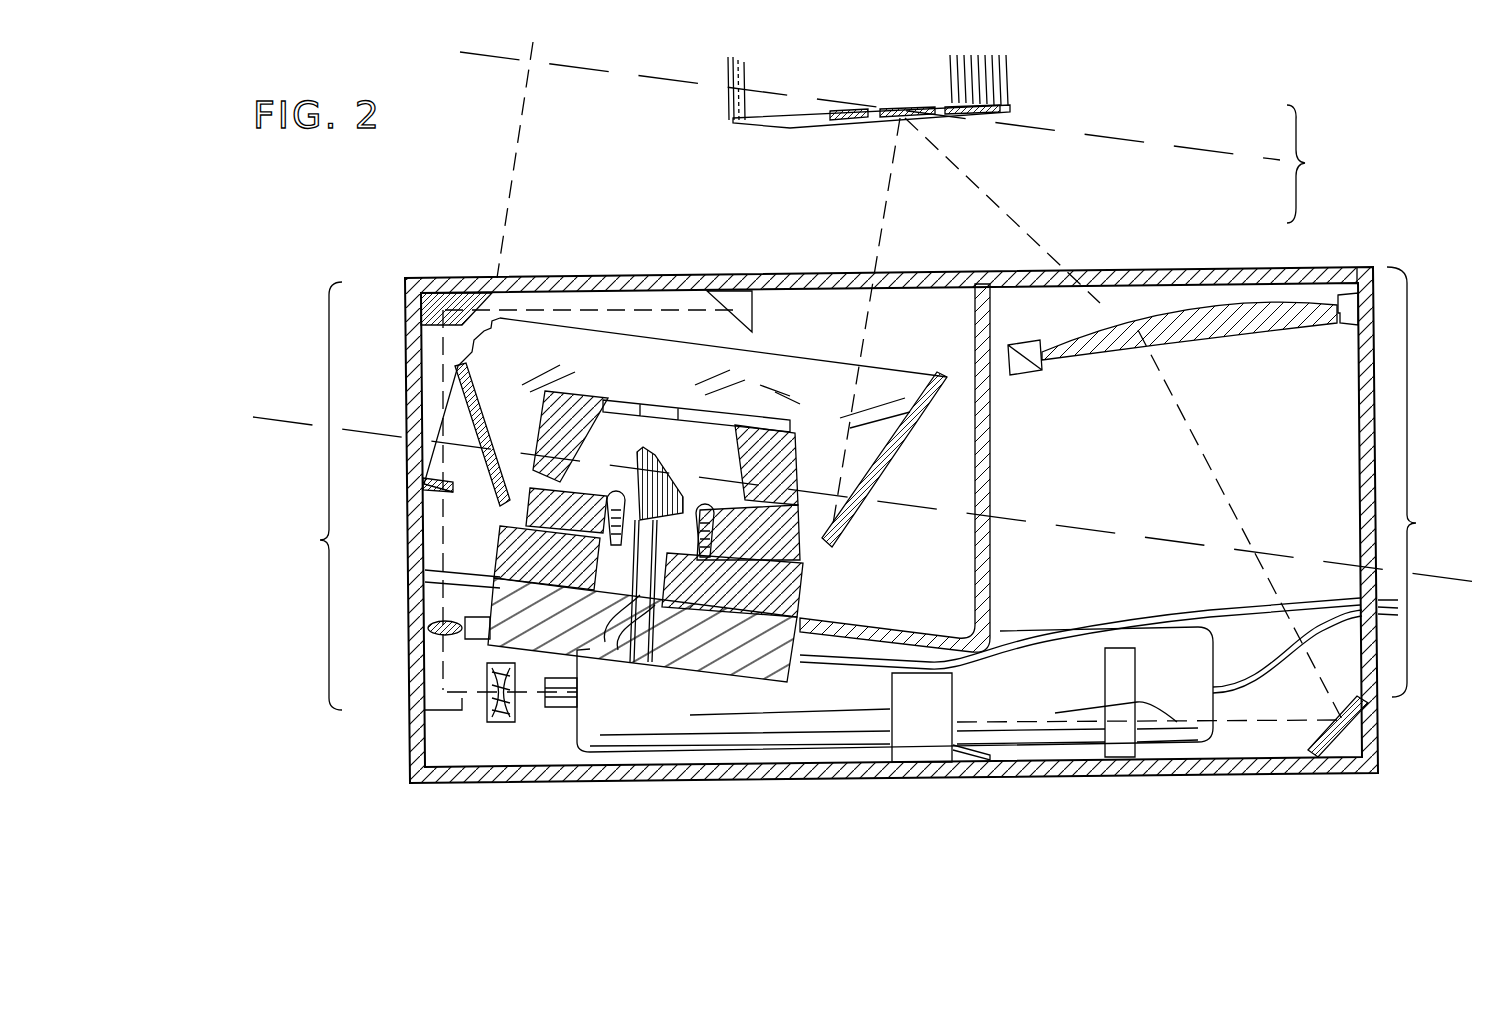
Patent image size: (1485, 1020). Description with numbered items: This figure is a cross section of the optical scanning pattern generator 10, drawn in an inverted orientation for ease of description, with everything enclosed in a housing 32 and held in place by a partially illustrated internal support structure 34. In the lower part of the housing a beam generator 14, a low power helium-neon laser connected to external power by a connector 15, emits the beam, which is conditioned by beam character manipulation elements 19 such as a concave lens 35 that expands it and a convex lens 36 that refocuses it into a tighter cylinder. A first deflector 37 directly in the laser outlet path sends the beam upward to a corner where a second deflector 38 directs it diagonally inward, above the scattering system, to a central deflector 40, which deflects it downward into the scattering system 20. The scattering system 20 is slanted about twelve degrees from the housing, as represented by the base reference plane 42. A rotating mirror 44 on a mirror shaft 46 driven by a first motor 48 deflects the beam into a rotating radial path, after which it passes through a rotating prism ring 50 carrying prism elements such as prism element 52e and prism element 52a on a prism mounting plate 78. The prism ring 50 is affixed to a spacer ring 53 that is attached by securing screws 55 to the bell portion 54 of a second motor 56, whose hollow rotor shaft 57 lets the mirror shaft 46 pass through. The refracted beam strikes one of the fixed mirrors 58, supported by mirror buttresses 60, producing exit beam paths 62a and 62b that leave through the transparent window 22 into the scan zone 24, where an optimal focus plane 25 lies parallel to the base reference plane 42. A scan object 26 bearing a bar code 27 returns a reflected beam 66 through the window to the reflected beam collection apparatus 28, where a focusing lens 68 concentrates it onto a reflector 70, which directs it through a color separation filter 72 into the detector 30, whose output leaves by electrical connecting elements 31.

The optical scanning pattern generator 10 is at (1366, 218).
The beam generator 14 is at (847, 705).
The connector 15 is at (1105, 617).
The beam character manipulation elements 19 is at (458, 657).
The scattering system 20 is at (320, 540).
The transparent window 22 is at (445, 282).
The scan zone 24 is at (1305, 163).
The optimal focus plane 25 is at (485, 60).
The scan object 26 is at (995, 73).
The bar code 27 is at (862, 115).
The reflected beam collection apparatus 28 is at (1112, 255).
The detector 30 is at (926, 730).
The electrical connecting elements 31 is at (970, 758).
The housing 32 is at (412, 543).
The internal support structure 34 is at (993, 460).
The concave lens 35 is at (508, 735).
The convex lens 36 is at (440, 628).
The first deflector 37 is at (433, 700).
The second deflector 38 is at (420, 295).
The central deflector 40 is at (740, 282).
The base reference plane 42 is at (290, 415).
The rotating mirror 44 is at (655, 455).
The mirror shaft 46 is at (645, 665).
The first motor 48 is at (773, 655).
The rotating prism ring 50 is at (774, 402).
The prism element 52a is at (878, 463).
The prism element 52e is at (572, 428).
The spacer ring 53 is at (532, 518).
The bell portion 54 is at (805, 592).
The securing screws 55 is at (612, 495).
The second motor 56 is at (520, 557).
The hollow rotor shaft 57 is at (640, 632).
The fixed mirrors 58 is at (518, 375).
The mirror buttresses 60 is at (455, 443).
The exit beam path 62a is at (872, 242).
The exit beam path 62b is at (513, 158).
The reflected beam 66 is at (1040, 222).
The focusing lens 68 is at (1210, 345).
The reflector 70 is at (1350, 695).
The color separation filter 72 is at (1127, 680).
The prism mounting plate 78 is at (780, 430).